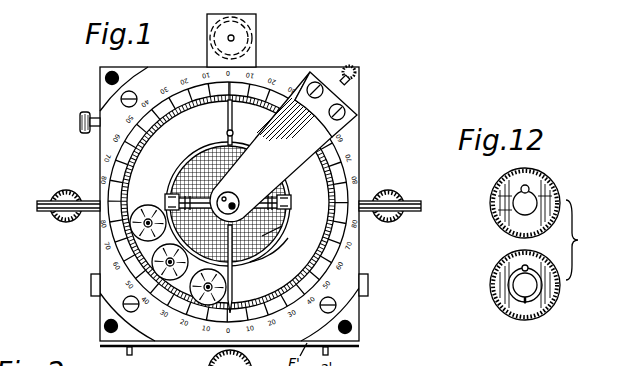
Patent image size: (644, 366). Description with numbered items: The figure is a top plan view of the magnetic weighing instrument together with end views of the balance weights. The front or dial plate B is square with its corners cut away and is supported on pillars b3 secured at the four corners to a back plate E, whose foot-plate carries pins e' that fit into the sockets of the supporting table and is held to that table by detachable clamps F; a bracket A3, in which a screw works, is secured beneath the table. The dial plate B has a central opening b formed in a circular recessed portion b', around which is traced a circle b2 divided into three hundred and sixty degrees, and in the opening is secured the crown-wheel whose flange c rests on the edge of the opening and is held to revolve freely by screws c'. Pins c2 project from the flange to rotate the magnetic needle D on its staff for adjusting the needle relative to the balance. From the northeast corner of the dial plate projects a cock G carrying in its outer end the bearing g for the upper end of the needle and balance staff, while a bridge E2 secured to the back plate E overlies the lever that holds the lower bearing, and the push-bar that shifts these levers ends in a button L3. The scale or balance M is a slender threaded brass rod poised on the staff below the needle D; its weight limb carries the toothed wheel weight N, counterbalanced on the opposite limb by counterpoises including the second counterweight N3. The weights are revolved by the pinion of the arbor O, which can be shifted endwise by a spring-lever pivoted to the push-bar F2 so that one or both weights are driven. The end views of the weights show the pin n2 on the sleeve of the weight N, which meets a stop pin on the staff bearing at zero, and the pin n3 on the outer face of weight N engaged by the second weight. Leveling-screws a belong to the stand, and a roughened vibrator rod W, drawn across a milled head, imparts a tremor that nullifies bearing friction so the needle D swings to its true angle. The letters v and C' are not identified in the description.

In FIG. 1, the back plate E is at (104, 92).
In FIG. 1, the plate or bracket A3 is at (243, 40).
In FIG. 1, the pillars b3 is at (134, 97).
In FIG. 1, the pins c2 is at (207, 153).
In FIG. 1, the flange c is at (228, 196).
In FIG. 1, the screws c' is at (221, 190).
In FIG. 1, the scale or balance M is at (289, 182).
In FIG. 1, the cock G is at (271, 147).
In FIG. 1, the bearing g is at (234, 197).
In FIG. 1, the magnetic needle D is at (236, 197).
In FIG. 1, the front or dial plate B is at (352, 131).
In FIG. 1, the circle b2 is at (347, 161).
In FIG. 1, the button L3 is at (358, 83).
In FIG. 1, the vibrator rod W is at (148, 216).
In FIG. 1, the counter wheels v is at (189, 274).
In FIG. 1, the second counterweight N3 is at (283, 227).
In FIG. 1, the bridge E2 is at (268, 243).
In FIG. 1, the circular recessed portion b' is at (256, 281).
In FIG. 1, the central opening b is at (272, 278).
In FIG. 1, the push-bar F2 is at (80, 124).
In FIG. 1, the leveling-screws a is at (230, 193).
In FIG. 1, the arbor O is at (38, 204).
In FIG. 1, the right shaft C' is at (401, 205).
In FIG. 1, the detachable clamps F is at (91, 285).
In FIG. 1, the pins e' is at (226, 356).
In FIG. 12, the weight N is at (542, 244).
In FIG. 12, the pin n3 is at (529, 188).
In FIG. 12, the pin n2 is at (521, 267).